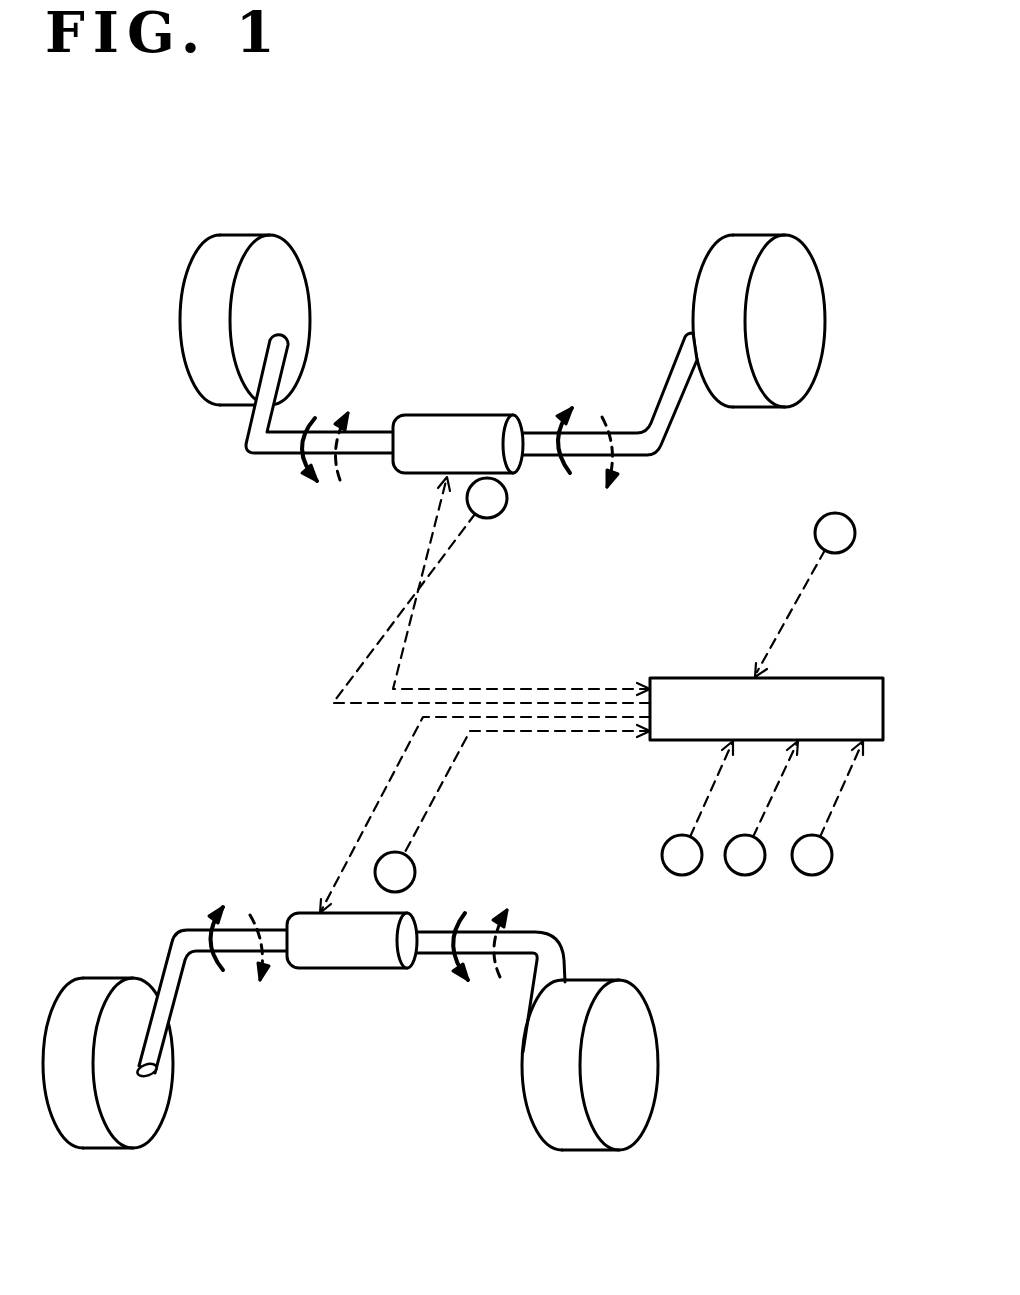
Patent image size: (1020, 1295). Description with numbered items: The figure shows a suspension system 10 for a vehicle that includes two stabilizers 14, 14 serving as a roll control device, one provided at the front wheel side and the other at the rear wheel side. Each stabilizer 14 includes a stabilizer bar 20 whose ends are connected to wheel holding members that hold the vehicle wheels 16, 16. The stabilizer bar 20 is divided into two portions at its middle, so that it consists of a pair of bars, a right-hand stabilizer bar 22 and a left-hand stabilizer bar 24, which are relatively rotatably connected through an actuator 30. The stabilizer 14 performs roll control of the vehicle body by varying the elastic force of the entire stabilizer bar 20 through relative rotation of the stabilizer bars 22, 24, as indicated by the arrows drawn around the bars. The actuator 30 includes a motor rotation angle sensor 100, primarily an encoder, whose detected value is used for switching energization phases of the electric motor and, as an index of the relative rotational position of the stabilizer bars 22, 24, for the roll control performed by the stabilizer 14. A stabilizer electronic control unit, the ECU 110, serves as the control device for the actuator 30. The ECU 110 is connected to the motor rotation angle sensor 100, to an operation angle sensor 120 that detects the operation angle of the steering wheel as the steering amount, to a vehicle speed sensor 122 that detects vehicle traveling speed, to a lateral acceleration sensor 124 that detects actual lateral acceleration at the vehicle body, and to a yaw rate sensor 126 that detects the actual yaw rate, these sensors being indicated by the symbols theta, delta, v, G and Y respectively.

The suspension system 10 is at (472, 245).
The stabilizer 14 is at (422, 345).
The vehicle wheel 16 is at (193, 355).
The stabilizer bar 20 is at (537, 478).
The right-hand stabilizer bar 22 is at (288, 445).
The left-hand stabilizer bar 24 is at (630, 447).
The actuator 30 is at (482, 428).
The motor rotation angle sensor 100 is at (498, 505).
The stabilizer electronic control unit 110 is at (848, 690).
The operation angle sensor 120 is at (843, 515).
The vehicle speed sensor 122 is at (692, 868).
The lateral acceleration sensor 124 is at (755, 868).
The yaw rate sensor 126 is at (822, 868).